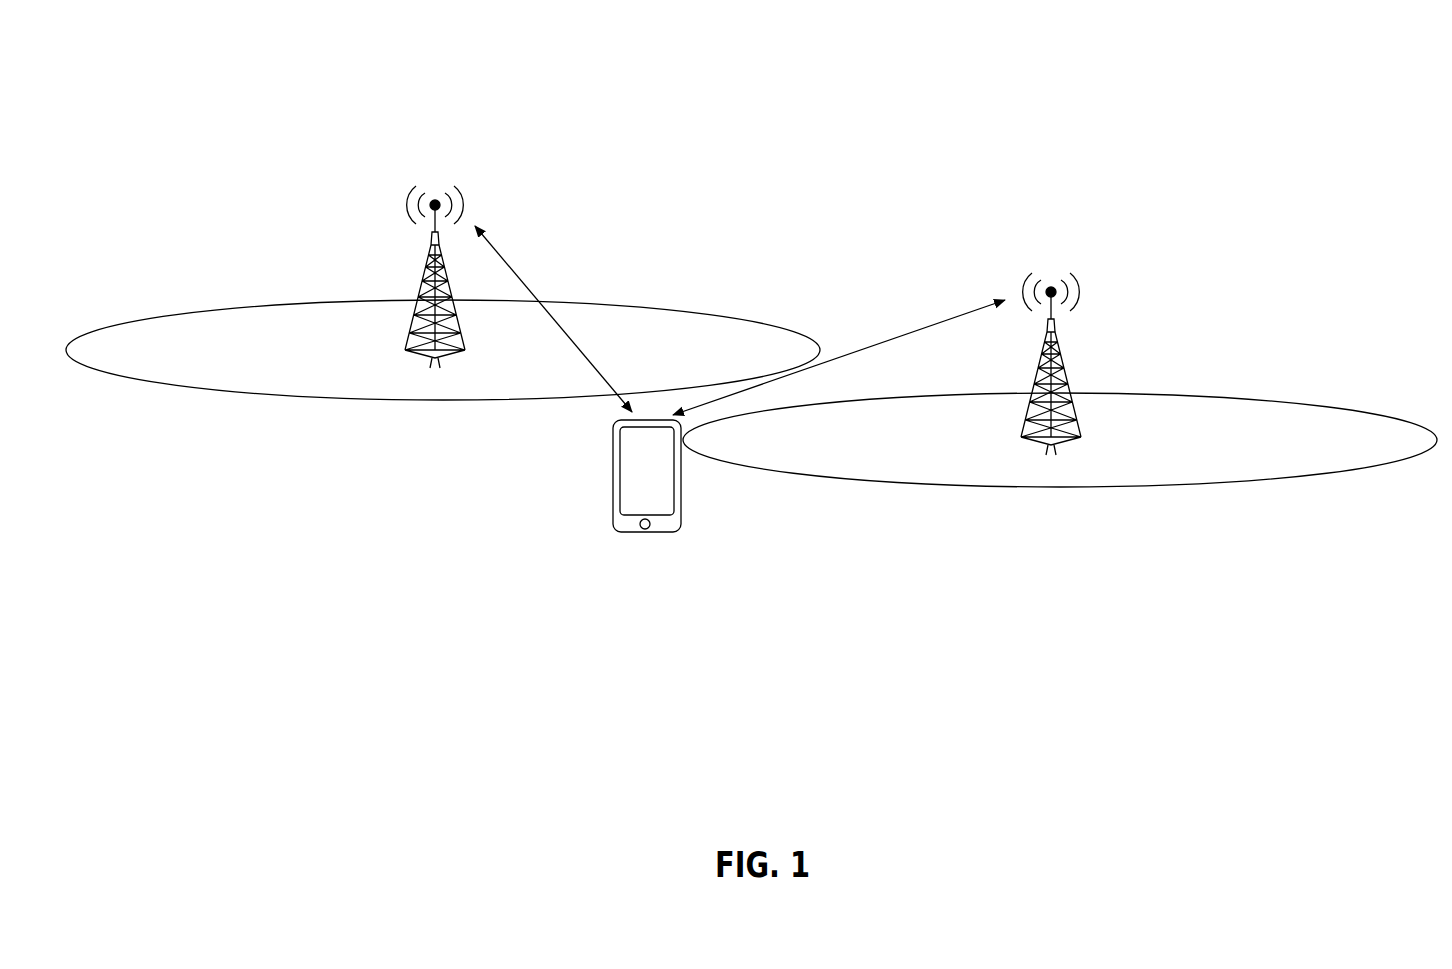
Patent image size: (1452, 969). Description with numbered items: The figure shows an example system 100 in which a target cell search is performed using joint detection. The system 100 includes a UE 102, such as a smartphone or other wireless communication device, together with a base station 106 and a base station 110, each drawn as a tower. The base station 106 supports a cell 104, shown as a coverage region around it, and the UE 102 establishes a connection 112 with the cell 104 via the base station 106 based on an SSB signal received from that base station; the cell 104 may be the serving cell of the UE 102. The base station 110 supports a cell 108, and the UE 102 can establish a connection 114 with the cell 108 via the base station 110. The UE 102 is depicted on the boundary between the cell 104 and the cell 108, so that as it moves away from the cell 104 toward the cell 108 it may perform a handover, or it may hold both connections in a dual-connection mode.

The system 100 is at (1283, 128).
The UE 102 is at (652, 534).
The cell 104 is at (341, 398).
The base station 106 is at (380, 220).
The cell 108 is at (1043, 487).
The base station 110 is at (1020, 292).
The connection 112 is at (518, 272).
The connection 114 is at (840, 357).